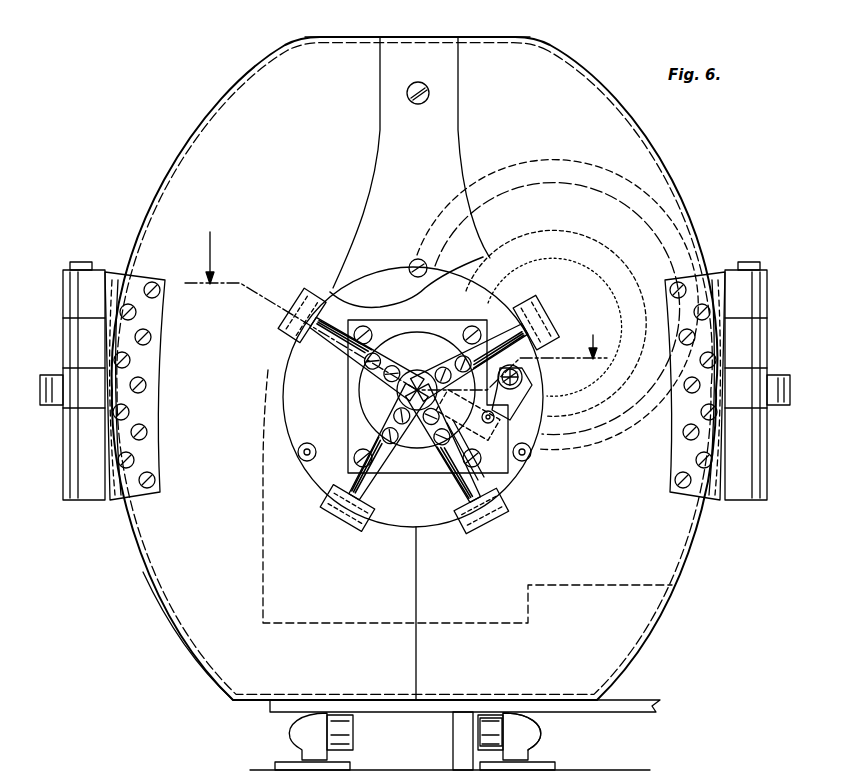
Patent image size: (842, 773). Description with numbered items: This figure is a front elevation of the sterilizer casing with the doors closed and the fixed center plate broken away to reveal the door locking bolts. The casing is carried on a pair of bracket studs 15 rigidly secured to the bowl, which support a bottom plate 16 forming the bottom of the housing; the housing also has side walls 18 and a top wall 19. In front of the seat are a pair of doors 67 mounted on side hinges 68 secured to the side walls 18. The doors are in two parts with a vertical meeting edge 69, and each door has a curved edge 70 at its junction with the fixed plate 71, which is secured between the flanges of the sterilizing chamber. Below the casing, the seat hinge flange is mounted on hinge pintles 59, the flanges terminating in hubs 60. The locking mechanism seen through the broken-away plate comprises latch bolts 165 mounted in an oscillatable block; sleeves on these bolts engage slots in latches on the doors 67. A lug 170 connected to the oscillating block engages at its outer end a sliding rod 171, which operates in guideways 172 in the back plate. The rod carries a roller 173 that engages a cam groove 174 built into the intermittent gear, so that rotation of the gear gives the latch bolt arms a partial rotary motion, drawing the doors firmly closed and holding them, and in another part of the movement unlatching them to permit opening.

The bracket studs 15 is at (546, 769).
The bottom plate 16 is at (368, 277).
The side walls 18 is at (144, 226).
The top wall 19 is at (386, 36).
The hinge pintles 59 is at (541, 733).
The hubs 60 is at (498, 746).
The doors 67 is at (170, 556).
The side hinges 68 is at (66, 256).
The vertical meeting edge 69 is at (417, 600).
The curved edge 70 is at (287, 420).
The fixed plate 71 is at (447, 58).
The latch bolts 165 is at (370, 486).
The lug 170 is at (495, 423).
The sliding rod 171 is at (437, 478).
The guideways 172 is at (470, 470).
The roller 173 is at (540, 402).
The cam groove 174 is at (538, 394).